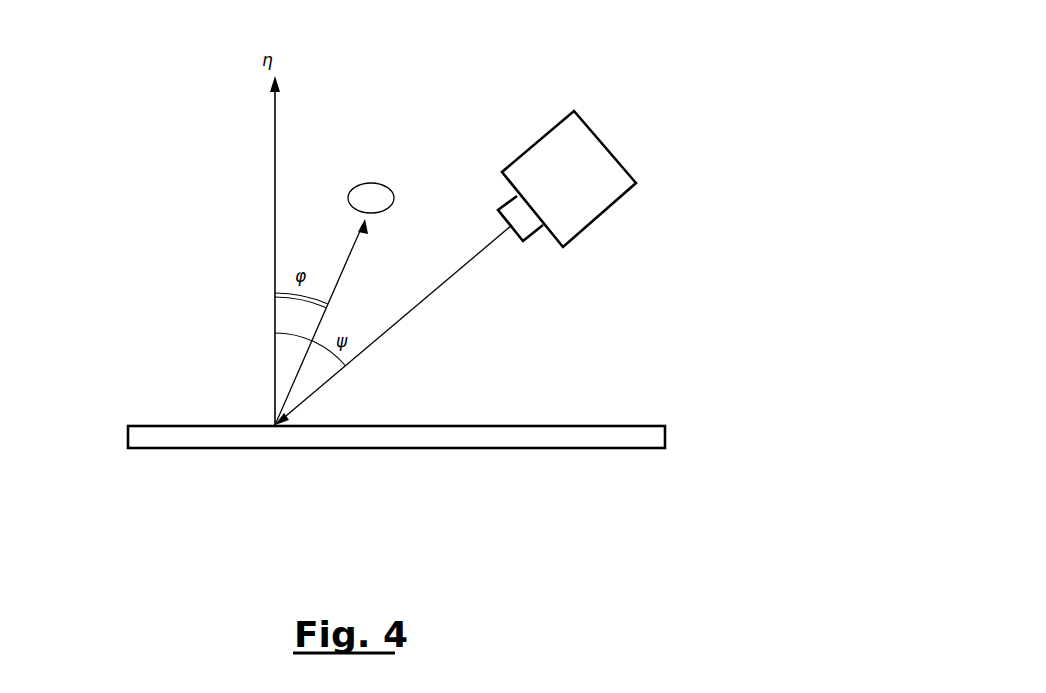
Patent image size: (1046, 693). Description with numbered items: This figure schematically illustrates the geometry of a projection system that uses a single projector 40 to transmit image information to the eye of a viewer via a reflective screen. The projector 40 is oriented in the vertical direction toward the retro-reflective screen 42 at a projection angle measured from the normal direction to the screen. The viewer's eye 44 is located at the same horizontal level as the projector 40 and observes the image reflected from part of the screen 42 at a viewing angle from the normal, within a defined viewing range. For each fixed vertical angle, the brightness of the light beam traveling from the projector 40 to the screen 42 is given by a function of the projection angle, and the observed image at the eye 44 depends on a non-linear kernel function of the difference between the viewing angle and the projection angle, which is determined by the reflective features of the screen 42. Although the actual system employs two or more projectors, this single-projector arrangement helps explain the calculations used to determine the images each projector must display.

The projector 40 is at (601, 129).
The retro-reflective screen 42 is at (145, 410).
The viewer's eye 44 is at (369, 172).